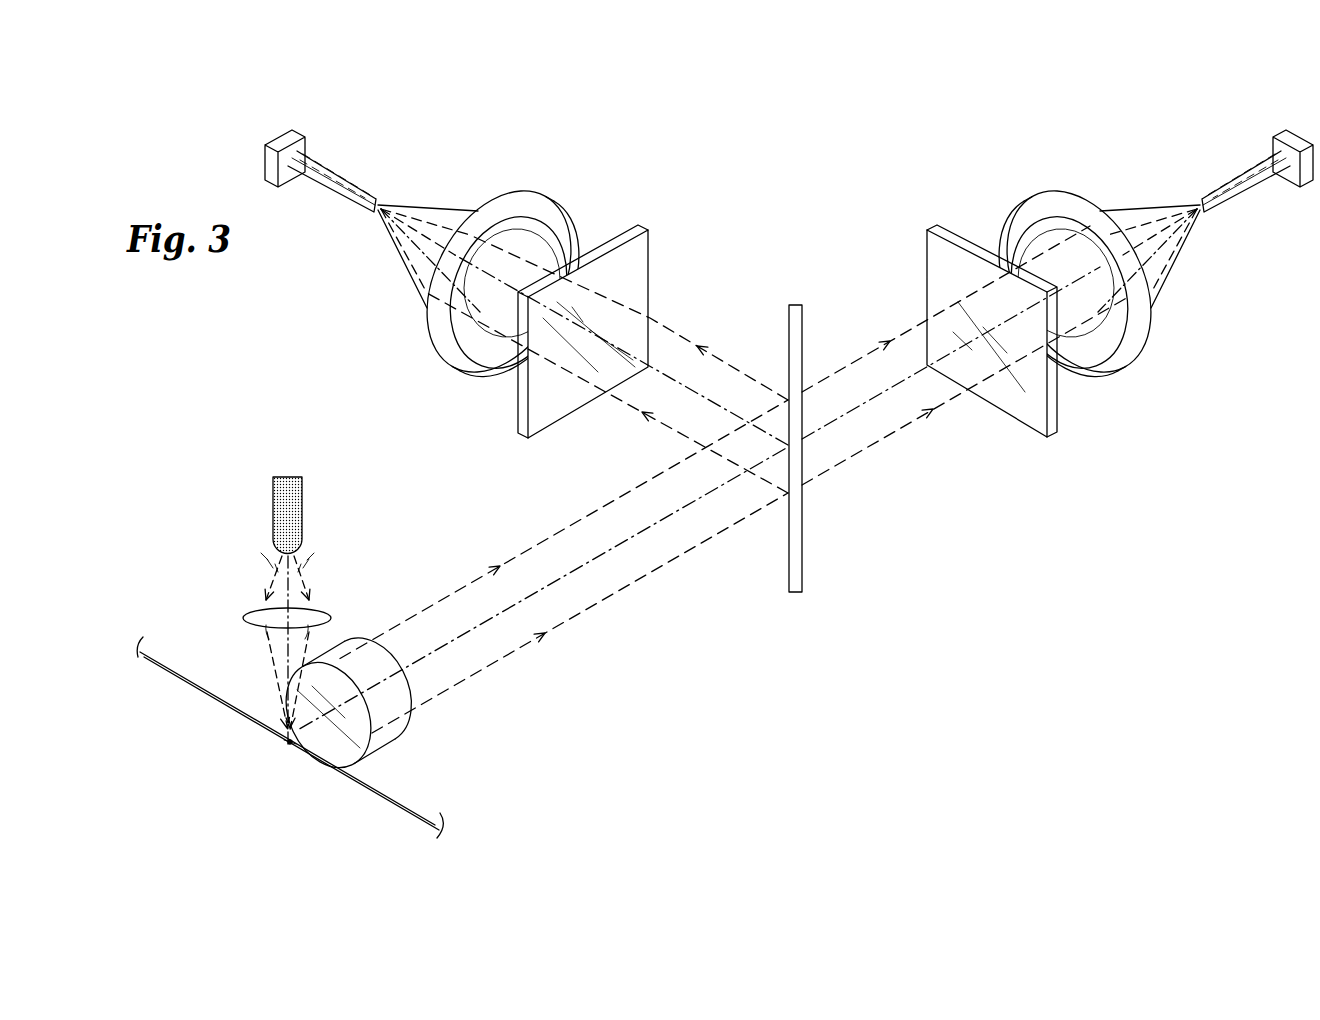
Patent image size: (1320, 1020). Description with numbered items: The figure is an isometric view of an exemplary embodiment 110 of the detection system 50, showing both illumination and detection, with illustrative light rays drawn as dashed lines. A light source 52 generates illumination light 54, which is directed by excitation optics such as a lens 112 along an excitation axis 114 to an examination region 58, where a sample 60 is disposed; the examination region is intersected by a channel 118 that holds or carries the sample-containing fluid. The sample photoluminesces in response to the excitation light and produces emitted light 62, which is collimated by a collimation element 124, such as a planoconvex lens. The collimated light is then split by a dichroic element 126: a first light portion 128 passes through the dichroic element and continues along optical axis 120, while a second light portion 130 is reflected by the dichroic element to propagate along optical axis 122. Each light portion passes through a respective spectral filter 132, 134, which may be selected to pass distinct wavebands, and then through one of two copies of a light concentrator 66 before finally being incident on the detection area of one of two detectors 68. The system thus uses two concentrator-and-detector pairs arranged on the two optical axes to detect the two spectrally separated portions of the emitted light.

The detection system 50 is at (689, 69).
The light source 52 is at (273, 513).
The illumination light 54 is at (266, 643).
The examination region 58 is at (274, 748).
The sample 60 is at (298, 747).
The emitted light 62 is at (500, 666).
The light concentrator 66 is at (437, 356).
The detector 68 is at (268, 186).
The exemplary embodiment of detection system 110 is at (714, 106).
The lens 112 is at (330, 612).
The excitation axis 114 is at (272, 664).
The channel 118 is at (200, 680).
The optical axis 120 is at (906, 386).
The optical axis 122 is at (668, 378).
The collimation element 124 is at (390, 750).
The dichroic element 126 is at (805, 527).
The first light portion 128 is at (841, 486).
The second light portion 130 is at (683, 319).
The spectral filter 132 is at (1012, 421).
The spectral filter 134 is at (565, 421).